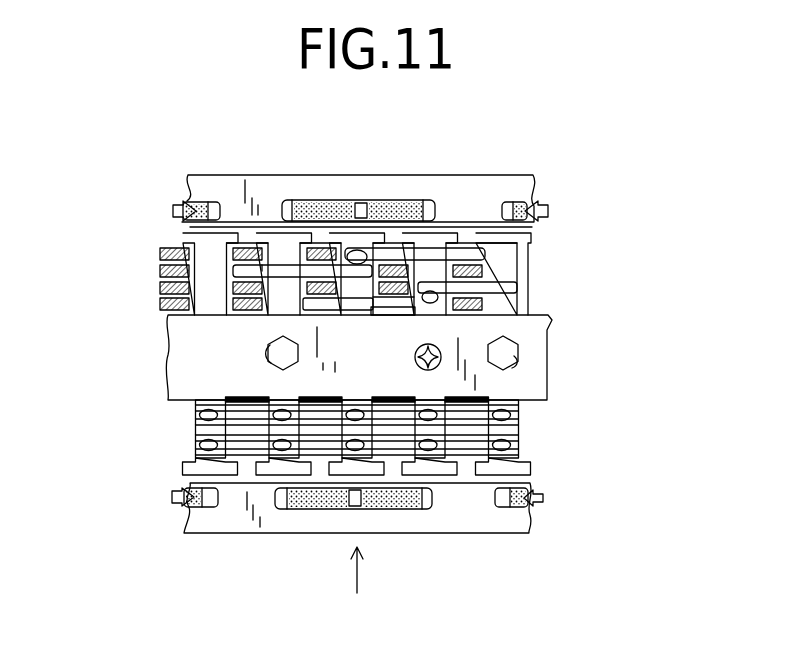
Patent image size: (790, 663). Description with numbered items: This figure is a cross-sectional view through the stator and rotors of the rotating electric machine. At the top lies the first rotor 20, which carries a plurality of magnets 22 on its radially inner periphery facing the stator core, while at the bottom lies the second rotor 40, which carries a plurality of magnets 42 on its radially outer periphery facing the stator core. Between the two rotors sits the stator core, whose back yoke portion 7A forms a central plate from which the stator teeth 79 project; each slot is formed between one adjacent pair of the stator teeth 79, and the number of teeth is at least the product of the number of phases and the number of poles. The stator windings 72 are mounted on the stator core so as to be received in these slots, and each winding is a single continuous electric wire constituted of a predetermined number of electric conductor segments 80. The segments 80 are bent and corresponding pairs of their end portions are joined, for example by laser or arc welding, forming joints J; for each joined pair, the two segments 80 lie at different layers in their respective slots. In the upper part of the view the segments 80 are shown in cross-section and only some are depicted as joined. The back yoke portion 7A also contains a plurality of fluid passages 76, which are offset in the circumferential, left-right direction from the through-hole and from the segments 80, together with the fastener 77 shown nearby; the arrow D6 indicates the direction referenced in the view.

The first rotor 20 is at (202, 185).
The magnets 22 is at (327, 200).
The stator teeth 79 is at (497, 247).
The stator windings 72 is at (413, 303).
The electric conductor segments 80 is at (416, 358).
The joints J is at (432, 290).
The back yoke portion 7A is at (142, 313).
The fluid passages 76 is at (270, 343).
The screw 77 is at (415, 353).
The second rotor 40 is at (217, 520).
The magnets 42 is at (320, 507).
The direction D6 is at (359, 590).